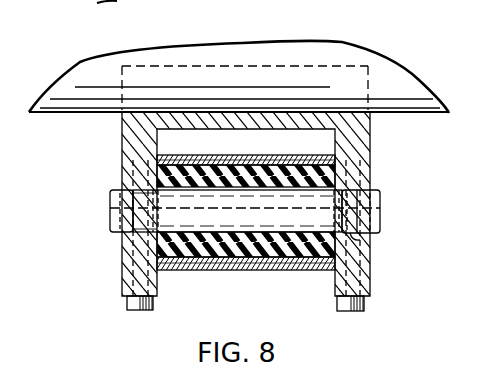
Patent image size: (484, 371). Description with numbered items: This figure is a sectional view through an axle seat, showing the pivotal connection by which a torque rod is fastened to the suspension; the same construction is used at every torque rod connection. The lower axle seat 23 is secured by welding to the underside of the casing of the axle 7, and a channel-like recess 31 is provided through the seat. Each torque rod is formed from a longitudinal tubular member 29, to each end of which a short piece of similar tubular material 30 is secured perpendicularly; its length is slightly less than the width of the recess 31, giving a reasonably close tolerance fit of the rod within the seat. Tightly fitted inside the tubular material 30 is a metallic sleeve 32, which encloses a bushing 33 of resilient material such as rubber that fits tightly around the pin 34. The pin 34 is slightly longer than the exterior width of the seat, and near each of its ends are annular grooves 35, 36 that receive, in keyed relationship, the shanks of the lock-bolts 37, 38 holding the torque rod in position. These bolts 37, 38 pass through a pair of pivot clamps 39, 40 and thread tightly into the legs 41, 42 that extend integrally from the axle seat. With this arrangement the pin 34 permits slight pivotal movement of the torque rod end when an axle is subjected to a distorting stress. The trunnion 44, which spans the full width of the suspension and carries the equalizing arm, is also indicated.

The axle 7 is at (400, 68).
The lower axle seat 23 is at (271, 43).
The trunnion 44 is at (155, 8).
The channel-like recess 31 is at (339, 140).
The leg 41 is at (135, 142).
The leg 42 is at (370, 160).
The pivot clamp 39 is at (123, 265).
The pivot clamp 40 is at (370, 280).
The lock-bolt 37 is at (125, 302).
The lock-bolt 38 is at (349, 313).
The tubular material 30 is at (176, 270).
The tubular member 29 is at (303, 267).
The metallic sleeve 32 is at (237, 268).
The bushing 33 is at (203, 237).
The pin 34 is at (110, 208).
The annular groove 35 is at (132, 242).
The annular groove 36 is at (364, 238).